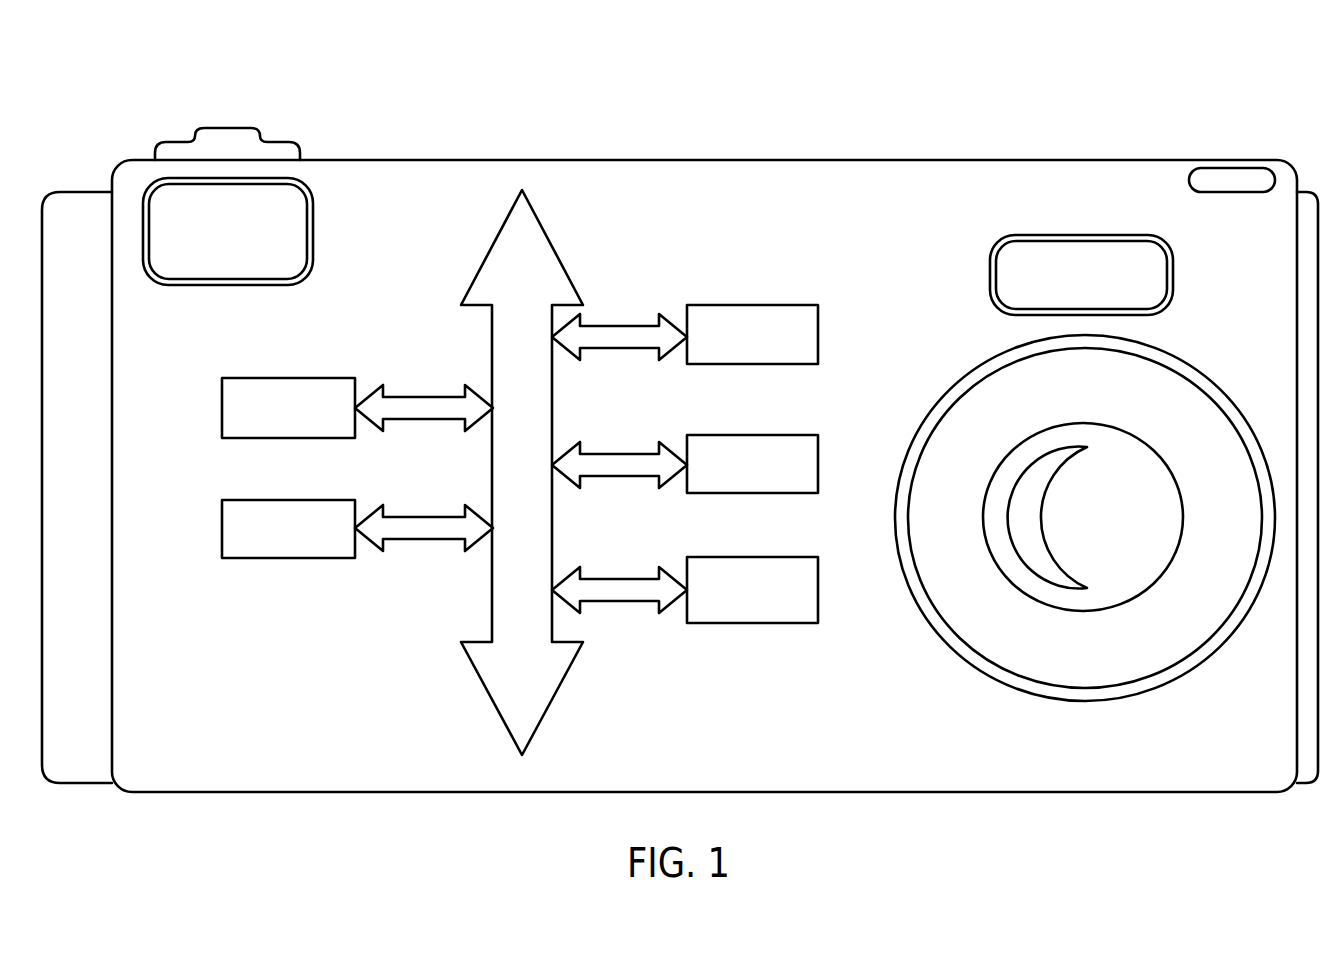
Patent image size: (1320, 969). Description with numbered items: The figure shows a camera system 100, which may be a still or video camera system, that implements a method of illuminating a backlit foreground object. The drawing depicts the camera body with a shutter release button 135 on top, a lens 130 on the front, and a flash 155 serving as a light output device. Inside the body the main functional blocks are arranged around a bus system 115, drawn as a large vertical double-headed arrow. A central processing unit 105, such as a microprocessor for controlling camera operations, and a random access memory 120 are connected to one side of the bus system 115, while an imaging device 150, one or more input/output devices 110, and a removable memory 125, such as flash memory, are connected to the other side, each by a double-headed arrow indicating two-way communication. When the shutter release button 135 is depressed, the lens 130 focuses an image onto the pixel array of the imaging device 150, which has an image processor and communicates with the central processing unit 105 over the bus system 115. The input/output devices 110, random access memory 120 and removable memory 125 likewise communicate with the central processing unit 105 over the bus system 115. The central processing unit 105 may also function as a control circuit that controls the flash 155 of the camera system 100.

The camera system 100 is at (1158, 108).
The central processing unit 105 is at (222, 413).
The input/output device 110 is at (819, 463).
The bus system 115 is at (495, 707).
The random access memory 120 is at (222, 534).
The removable memory 125 is at (819, 588).
The lens 130 is at (1169, 356).
The shutter release button 135 is at (226, 138).
The imaging device 150 is at (819, 333).
The flash 155 is at (1081, 235).